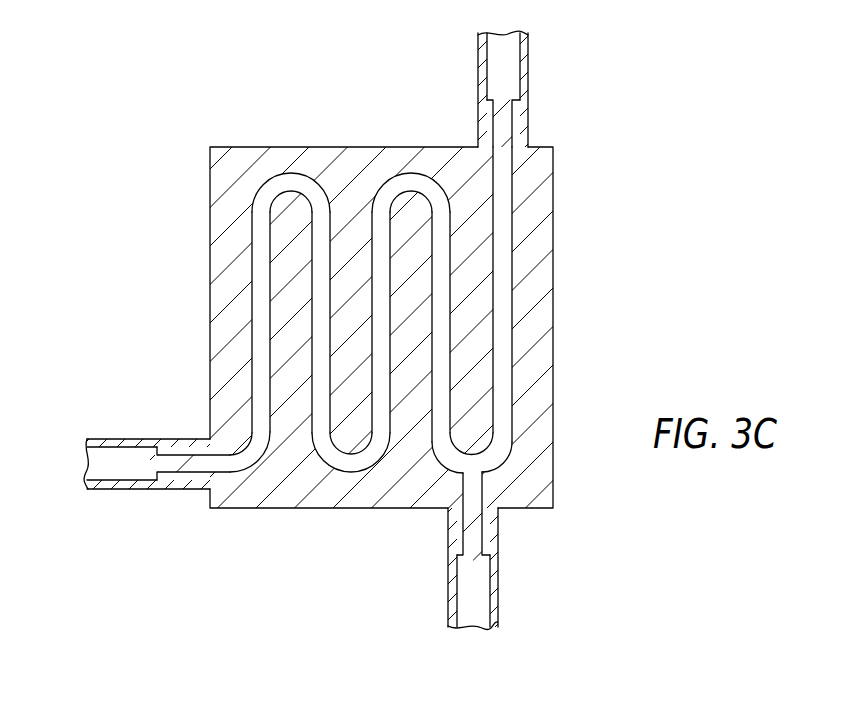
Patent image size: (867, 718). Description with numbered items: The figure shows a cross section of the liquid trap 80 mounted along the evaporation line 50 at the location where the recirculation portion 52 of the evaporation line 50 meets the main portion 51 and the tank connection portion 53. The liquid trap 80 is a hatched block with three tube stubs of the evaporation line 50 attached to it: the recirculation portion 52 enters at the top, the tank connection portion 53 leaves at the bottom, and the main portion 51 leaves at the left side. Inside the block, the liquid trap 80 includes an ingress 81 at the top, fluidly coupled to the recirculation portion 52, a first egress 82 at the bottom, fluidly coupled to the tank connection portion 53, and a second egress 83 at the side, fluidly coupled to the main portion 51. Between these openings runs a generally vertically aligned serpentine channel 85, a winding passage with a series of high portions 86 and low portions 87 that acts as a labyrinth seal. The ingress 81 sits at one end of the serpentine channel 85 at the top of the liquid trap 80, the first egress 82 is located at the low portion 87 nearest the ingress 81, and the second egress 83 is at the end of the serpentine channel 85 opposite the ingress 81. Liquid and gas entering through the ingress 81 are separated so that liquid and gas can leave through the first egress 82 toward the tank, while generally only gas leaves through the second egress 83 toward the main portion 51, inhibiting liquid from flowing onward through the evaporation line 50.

The evaporation line 50 is at (433, 335).
The main portion 51 is at (107, 439).
The recirculation portion 52 is at (477, 63).
The tank connection portion 53 is at (498, 592).
The liquid trap 80 is at (240, 147).
The ingress 81 is at (502, 127).
The first egress 82 is at (473, 527).
The second egress 83 is at (185, 465).
The serpentine channel 85 is at (503, 315).
The high portions 86 is at (288, 183).
The low portions 87 is at (237, 463).